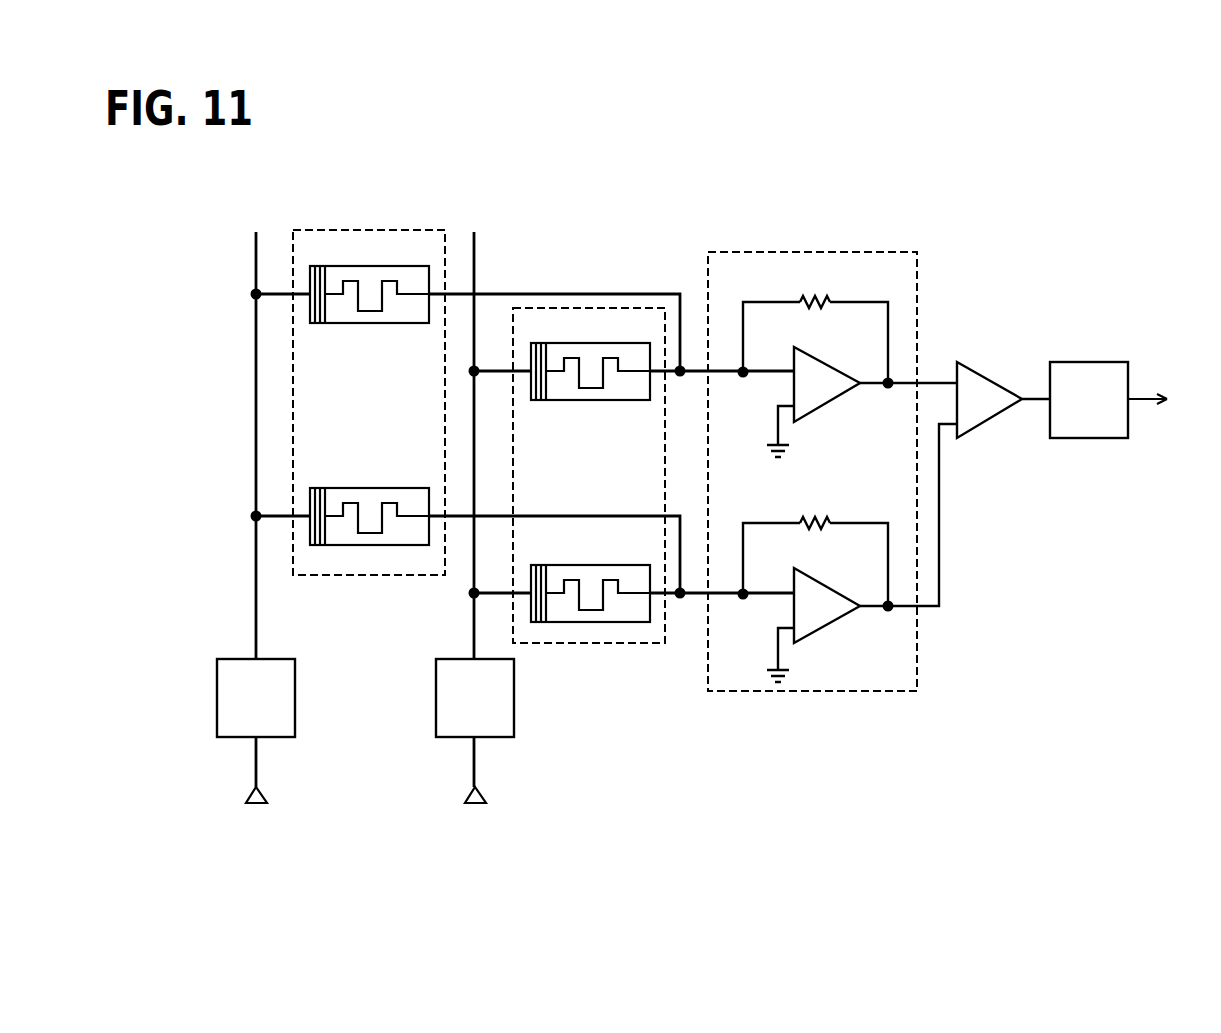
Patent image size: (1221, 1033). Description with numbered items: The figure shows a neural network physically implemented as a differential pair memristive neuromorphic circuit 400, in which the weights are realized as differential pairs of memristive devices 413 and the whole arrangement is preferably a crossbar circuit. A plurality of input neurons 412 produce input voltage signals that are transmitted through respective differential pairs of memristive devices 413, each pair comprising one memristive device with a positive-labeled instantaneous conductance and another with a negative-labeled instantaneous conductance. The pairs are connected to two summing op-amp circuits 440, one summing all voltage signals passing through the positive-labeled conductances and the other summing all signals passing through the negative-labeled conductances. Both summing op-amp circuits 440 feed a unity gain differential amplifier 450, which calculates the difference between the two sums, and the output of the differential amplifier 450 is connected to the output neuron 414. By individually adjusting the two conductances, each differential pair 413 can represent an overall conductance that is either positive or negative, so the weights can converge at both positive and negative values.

The differential pair memristive neuromorphic circuit 400 is at (1157, 317).
The input neuron 412 is at (222, 737).
The differential pair of memristive devices 413 is at (366, 575).
The output neuron 414 is at (1102, 438).
The summing op-amp circuit 440 is at (820, 691).
The unity gain differential amplifier 450 is at (983, 425).